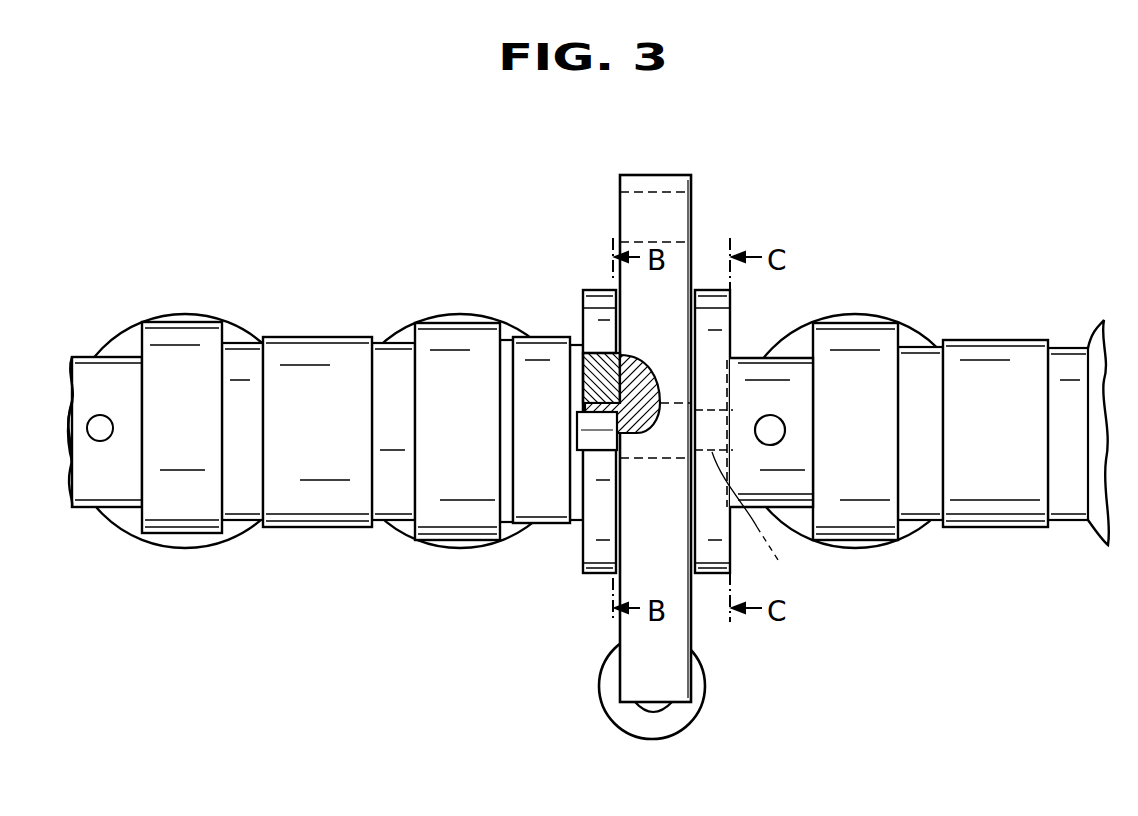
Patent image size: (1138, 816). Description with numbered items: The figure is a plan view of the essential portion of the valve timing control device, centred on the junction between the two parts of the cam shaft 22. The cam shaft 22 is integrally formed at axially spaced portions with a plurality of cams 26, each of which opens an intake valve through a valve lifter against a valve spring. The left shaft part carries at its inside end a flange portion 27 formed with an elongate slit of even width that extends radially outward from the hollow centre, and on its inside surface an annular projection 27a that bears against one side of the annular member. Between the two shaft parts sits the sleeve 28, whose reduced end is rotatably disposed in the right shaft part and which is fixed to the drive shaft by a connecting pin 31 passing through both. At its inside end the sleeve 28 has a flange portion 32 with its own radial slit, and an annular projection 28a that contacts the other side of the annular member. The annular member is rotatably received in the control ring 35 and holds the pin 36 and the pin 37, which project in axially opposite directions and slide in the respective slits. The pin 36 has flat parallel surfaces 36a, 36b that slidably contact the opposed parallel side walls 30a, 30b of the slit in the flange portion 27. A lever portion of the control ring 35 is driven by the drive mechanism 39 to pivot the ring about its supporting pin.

The cam shaft 22 is at (320, 343).
The cams 26 is at (183, 322).
The flange portion 27 is at (598, 300).
The annular projection 27a is at (637, 545).
The sleeve 28 is at (777, 370).
The annular projection 28a is at (683, 513).
The side wall of slit 30a is at (585, 442).
The side wall of slit 30b is at (577, 425).
The connecting pin 31 is at (777, 435).
The flange portion 32 is at (718, 325).
The control ring 35 is at (677, 625).
The pin 36 is at (637, 410).
The flat parallel surface 36a is at (600, 455).
The flat parallel surface 36b is at (597, 353).
The pin 37 is at (764, 518).
The drive mechanism 39 is at (594, 676).